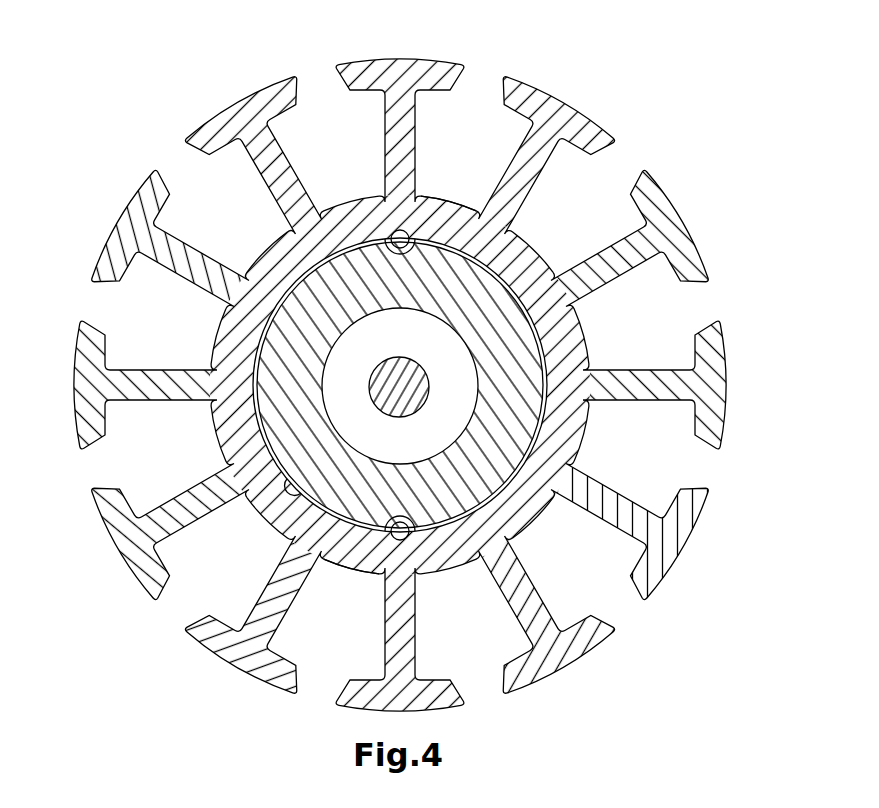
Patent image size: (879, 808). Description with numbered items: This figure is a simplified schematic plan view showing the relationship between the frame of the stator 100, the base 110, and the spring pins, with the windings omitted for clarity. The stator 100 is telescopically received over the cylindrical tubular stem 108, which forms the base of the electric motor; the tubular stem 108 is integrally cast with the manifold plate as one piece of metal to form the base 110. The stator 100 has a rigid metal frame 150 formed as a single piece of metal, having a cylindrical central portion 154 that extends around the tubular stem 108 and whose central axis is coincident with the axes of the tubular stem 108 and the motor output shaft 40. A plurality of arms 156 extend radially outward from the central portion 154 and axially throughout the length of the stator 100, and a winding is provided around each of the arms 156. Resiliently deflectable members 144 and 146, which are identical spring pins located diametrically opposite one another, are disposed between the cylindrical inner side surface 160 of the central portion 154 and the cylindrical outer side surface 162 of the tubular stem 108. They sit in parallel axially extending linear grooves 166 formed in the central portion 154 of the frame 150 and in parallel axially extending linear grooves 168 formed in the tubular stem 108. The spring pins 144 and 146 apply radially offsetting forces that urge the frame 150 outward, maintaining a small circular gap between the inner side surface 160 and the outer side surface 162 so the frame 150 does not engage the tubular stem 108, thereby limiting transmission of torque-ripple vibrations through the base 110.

The stator 100 is at (417, 364).
The rigid metal frame 150 is at (417, 364).
The cylindrical central portion 154 is at (277, 243).
The arms 156 is at (409, 58).
The resiliently deflectable member 144 is at (447, 198).
The resiliently deflectable member 146 is at (385, 548).
The base 110 is at (443, 393).
The cylindrical outer side surface 162 is at (263, 333).
The cylindrical tubular stem 108 is at (498, 352).
The motor output shaft 40 is at (413, 395).
The cylindrical inner side surface 160 is at (300, 493).
The linear grooves 166 is at (396, 233).
The linear grooves 168 is at (410, 243).